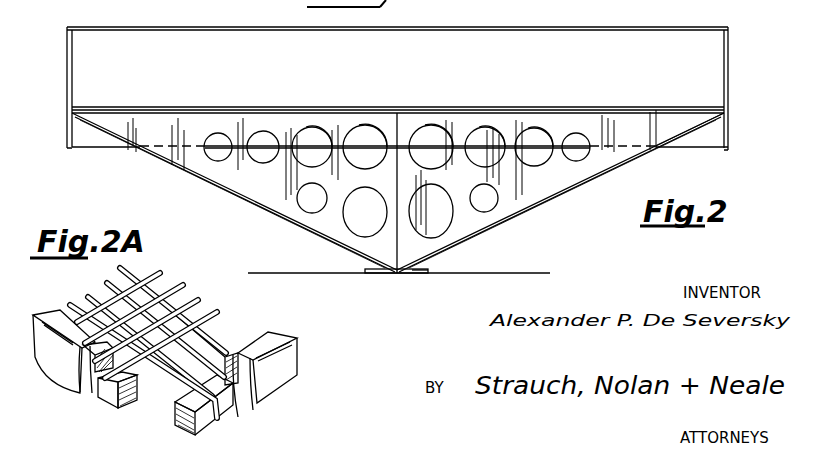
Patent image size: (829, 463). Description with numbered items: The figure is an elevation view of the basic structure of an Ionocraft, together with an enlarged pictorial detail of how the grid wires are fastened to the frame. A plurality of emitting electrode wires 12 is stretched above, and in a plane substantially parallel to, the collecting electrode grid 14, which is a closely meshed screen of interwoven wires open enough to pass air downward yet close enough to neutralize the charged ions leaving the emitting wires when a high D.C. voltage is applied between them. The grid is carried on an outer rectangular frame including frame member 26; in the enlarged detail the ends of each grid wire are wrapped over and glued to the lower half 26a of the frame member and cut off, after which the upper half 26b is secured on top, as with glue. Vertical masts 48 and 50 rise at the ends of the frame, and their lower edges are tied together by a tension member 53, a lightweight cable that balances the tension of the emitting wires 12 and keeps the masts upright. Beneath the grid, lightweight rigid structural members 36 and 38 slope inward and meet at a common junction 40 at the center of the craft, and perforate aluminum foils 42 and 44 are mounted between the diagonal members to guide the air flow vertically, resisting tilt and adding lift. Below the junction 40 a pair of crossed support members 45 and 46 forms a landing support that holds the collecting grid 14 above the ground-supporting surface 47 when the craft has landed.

In FIG. 2, the emitting electrode wires 12 is at (450, 28).
In FIG. 2, the collecting electrode grid 14 is at (320, 107).
In FIG. 2, the frame member 26 is at (254, 112).
In FIG. 2A, the lower half of the frame member 26a is at (177, 425).
In FIG. 2A, the upper half of the frame member 26b is at (238, 403).
In FIG. 2, the structural member 36 is at (237, 193).
In FIG. 2, the structural member 38 is at (520, 212).
In FIG. 2, the common junction 40 is at (403, 262).
In FIG. 2, the perforate metal sheet or foil 42 is at (272, 195).
In FIG. 2, the perforate metal sheet or foil 44 is at (553, 183).
In FIG. 2, the crossed support member 45 is at (396, 275).
In FIG. 2, the crossed support member 46 is at (418, 277).
In FIG. 2, the ground-supporting surface 47 is at (512, 273).
In FIG. 2, the mast 48 is at (67, 82).
In FIG. 2, the mast 50 is at (728, 70).
In FIG. 2, the tension member 53 is at (655, 148).